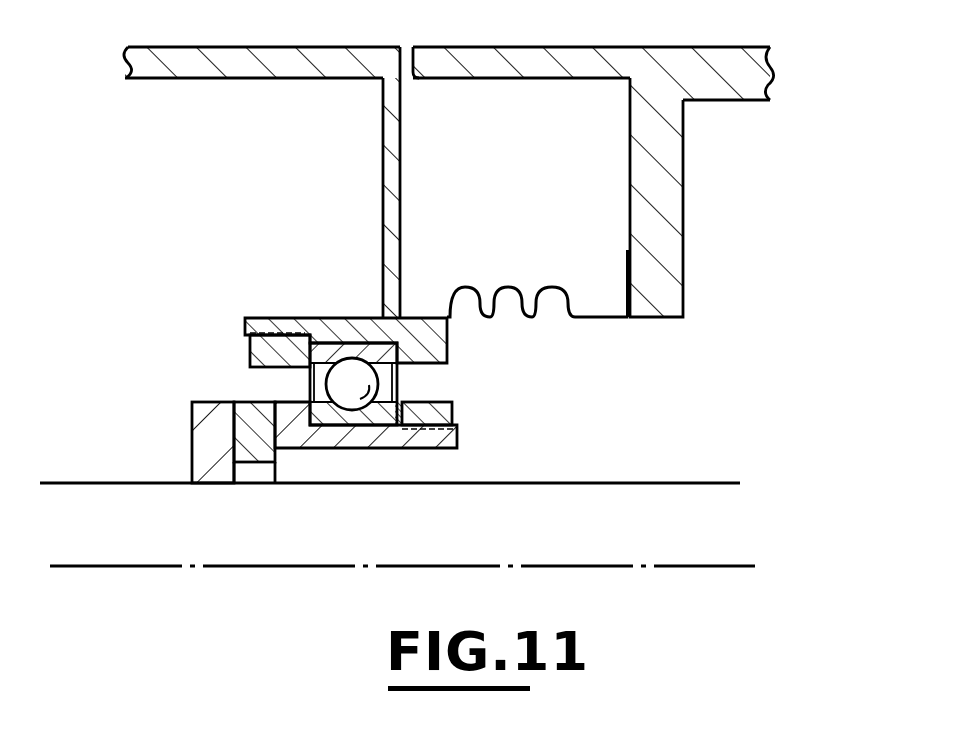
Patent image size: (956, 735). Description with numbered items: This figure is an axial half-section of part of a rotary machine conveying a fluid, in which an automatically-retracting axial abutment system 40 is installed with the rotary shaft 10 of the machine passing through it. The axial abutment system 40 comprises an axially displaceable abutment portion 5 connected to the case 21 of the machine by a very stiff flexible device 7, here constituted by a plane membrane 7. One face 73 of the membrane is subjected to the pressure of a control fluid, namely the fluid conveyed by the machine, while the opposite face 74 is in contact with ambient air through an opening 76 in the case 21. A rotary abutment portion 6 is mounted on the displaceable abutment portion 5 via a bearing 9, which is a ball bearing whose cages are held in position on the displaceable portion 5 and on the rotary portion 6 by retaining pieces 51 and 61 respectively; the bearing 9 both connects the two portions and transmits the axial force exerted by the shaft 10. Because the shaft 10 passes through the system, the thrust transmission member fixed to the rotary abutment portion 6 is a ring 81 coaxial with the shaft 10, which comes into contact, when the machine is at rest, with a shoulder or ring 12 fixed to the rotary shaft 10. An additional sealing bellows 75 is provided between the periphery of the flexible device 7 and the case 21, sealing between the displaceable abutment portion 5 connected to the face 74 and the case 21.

The case 21 is at (233, 67).
The opening 76 is at (411, 76).
The face 73 is at (383, 160).
The face 74 is at (402, 182).
The flexible device 7 is at (392, 225).
The sealing bellows 75 is at (523, 287).
The displaceable abutment portion 5 is at (323, 322).
The retaining piece 51 is at (253, 350).
The bearing 9 is at (387, 390).
The retaining piece 61 is at (452, 412).
The rotary abutment portion 6 is at (457, 450).
The ring 81 is at (253, 412).
The shoulder or ring 12 is at (208, 428).
The shaft 10 is at (578, 507).
The axial abutment system 40 is at (385, 462).